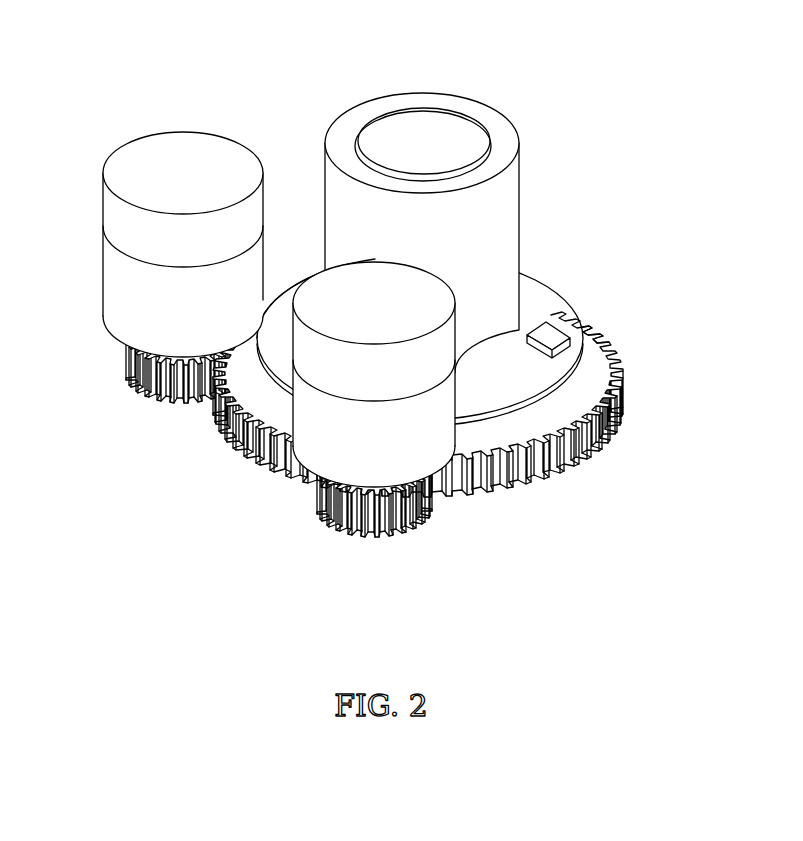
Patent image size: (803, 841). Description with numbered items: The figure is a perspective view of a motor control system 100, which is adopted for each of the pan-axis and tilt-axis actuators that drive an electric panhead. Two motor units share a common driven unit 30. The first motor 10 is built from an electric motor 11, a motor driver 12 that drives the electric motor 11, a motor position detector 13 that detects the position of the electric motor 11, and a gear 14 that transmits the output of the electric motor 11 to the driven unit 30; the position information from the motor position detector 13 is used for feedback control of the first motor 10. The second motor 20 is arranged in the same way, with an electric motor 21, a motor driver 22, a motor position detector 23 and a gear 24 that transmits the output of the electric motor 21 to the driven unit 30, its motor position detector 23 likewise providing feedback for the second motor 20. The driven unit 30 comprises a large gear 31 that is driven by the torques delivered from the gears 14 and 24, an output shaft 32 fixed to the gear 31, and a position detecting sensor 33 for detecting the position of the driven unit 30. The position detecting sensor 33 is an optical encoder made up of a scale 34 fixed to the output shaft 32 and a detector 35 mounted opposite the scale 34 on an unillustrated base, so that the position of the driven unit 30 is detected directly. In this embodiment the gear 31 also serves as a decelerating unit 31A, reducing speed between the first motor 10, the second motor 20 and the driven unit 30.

The motor control system 100 is at (680, 45).
The first motor 10 is at (150, 209).
The electric motor 11 is at (133, 313).
The motor driver 12 is at (150, 319).
The motor position detector 13 is at (135, 237).
The gear 14 is at (143, 394).
The second motor 20 is at (340, 389).
The electric motor 21 is at (391, 455).
The motor driver 22 is at (409, 535).
The motor position detector 23 is at (416, 360).
The gear 24 is at (383, 505).
The driven unit 30 is at (452, 223).
The gear 31 is at (587, 457).
The decelerating unit 31A is at (420, 341).
The output shaft 32 is at (500, 250).
The position detecting sensor 33 is at (607, 305).
The scale 34 is at (593, 340).
The detector 35 is at (567, 318).